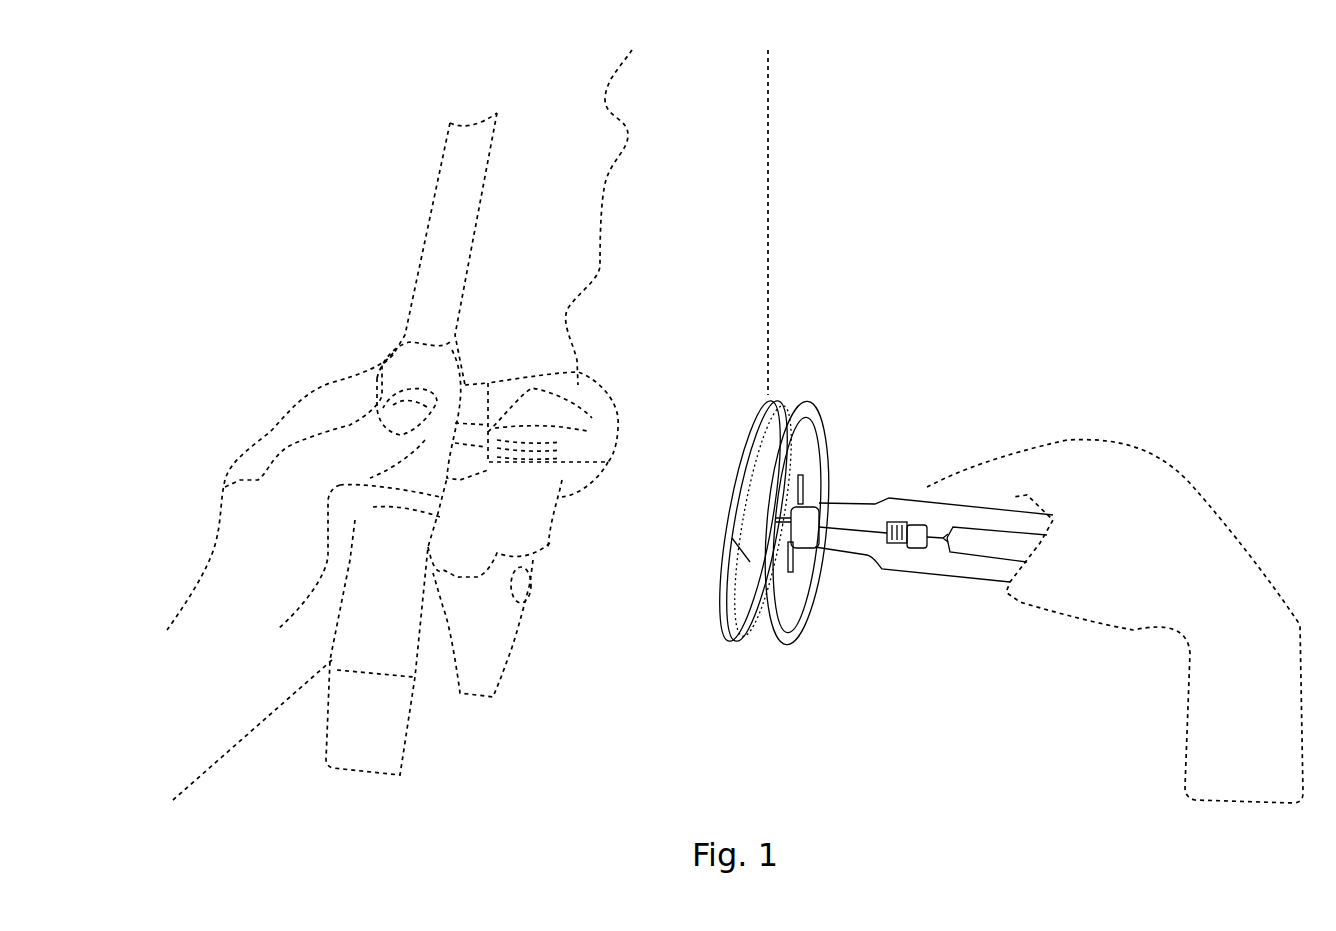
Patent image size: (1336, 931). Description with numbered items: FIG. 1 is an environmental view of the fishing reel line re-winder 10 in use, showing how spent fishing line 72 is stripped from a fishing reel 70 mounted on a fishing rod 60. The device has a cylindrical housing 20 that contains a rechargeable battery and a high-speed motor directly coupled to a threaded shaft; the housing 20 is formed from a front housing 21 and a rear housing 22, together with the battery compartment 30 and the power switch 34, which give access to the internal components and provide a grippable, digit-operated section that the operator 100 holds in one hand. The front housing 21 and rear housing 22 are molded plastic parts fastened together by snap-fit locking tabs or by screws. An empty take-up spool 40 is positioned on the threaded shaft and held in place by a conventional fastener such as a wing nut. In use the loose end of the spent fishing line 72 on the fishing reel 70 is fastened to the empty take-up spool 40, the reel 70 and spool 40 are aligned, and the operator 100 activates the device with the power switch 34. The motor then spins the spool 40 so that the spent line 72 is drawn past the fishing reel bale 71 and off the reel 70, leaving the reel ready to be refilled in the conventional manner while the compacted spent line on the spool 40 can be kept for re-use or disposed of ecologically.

The fishing reel line re-winder 10 is at (1222, 214).
The housing 20 is at (929, 575).
The front housing 21 is at (880, 500).
The rear housing 22 is at (878, 567).
The battery compartment 30 is at (975, 543).
The power switch 34 is at (903, 524).
The take-up spool 40 is at (779, 643).
The fishing rod 60 is at (433, 208).
The fishing reel 70 is at (512, 655).
The fishing reel bale 71 is at (610, 463).
The fishing line 72 is at (768, 187).
The operator 100 is at (270, 430).